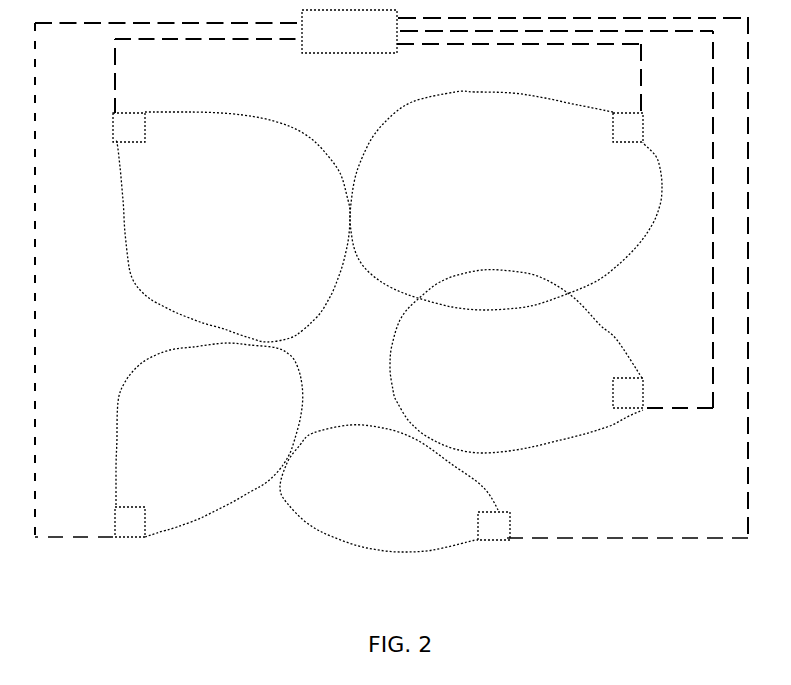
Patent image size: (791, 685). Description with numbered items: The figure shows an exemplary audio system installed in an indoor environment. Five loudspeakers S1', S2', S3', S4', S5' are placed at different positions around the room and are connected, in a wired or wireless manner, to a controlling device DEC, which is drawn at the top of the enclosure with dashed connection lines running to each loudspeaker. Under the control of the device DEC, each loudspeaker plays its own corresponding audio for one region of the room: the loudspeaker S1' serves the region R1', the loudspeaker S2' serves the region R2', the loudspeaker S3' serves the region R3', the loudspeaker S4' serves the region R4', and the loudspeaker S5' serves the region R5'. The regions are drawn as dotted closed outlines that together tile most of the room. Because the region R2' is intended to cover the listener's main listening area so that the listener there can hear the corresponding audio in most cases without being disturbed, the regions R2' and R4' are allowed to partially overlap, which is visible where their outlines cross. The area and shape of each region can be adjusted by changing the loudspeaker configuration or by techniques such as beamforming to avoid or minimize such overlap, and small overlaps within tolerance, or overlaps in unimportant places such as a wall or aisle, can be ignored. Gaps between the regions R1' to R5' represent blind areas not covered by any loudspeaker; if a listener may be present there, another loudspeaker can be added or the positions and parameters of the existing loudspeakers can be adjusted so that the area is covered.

The device DEC is at (349, 31).
The region R1' is at (232, 227).
The region R2' is at (506, 200).
The region R3' is at (209, 440).
The region R4' is at (516, 361).
The region R5' is at (389, 488).
The loudspeaker S1' is at (99, 142).
The loudspeaker S2' is at (654, 143).
The loudspeaker S3' is at (97, 508).
The loudspeaker S4' is at (652, 379).
The loudspeaker S5' is at (522, 510).